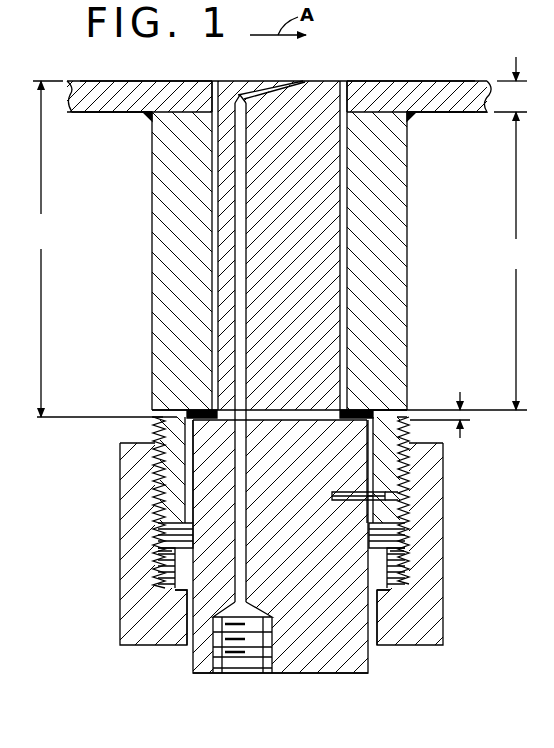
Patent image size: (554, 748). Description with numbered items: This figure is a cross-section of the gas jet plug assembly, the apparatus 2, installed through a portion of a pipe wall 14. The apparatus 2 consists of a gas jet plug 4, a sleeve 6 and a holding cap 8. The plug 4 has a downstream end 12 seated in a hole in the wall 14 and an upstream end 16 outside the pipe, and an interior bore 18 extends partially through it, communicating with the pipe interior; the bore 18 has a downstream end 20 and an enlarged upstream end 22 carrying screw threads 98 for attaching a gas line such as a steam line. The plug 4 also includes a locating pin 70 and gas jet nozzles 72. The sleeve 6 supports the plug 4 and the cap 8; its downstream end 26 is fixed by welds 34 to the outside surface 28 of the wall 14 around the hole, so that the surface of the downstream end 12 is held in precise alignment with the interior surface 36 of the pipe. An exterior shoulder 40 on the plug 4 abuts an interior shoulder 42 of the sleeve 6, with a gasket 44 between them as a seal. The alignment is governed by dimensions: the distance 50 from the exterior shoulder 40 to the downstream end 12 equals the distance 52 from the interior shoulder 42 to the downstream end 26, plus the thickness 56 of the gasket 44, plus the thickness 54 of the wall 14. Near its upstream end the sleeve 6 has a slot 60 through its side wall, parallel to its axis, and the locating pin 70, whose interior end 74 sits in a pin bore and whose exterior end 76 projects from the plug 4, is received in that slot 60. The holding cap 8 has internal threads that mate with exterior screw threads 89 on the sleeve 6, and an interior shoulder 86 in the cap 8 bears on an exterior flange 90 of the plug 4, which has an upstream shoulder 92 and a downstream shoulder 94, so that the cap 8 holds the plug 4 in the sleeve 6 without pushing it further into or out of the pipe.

The apparatus 2 is at (80, 606).
The gas jet plug 4 is at (284, 355).
The sleeve 6 is at (152, 258).
The holding cap 8 is at (122, 515).
The downstream end 12 is at (262, 80).
The wall 14 is at (413, 90).
The upstream end 16 is at (333, 674).
The interior bore 18 is at (242, 300).
The downstream end 20 is at (236, 97).
The upstream end 22 is at (298, 655).
The downstream end 26 is at (183, 110).
The outside surface 28 is at (97, 113).
The welds 34 is at (148, 116).
The interior surface 36 is at (90, 80).
The exterior shoulder 40 is at (344, 426).
The interior shoulder 42 is at (190, 410).
The gasket 44 is at (188, 418).
The distance 50 is at (103, 249).
The distance 52 is at (450, 261).
The thickness 54 is at (521, 82).
The thickness 56 is at (463, 416).
The slot 60 is at (392, 517).
The locating pin 70 is at (345, 504).
The gas jet nozzles 72 is at (292, 84).
The interior end 74 is at (335, 493).
The exterior end 76 is at (390, 495).
The interior shoulder 86 is at (168, 592).
The exterior screw threads 89 is at (158, 423).
The exterior flange 90 is at (175, 564).
The upstream shoulder 92 is at (173, 592).
The downstream shoulder 94 is at (182, 547).
The screw threads 98 is at (243, 658).